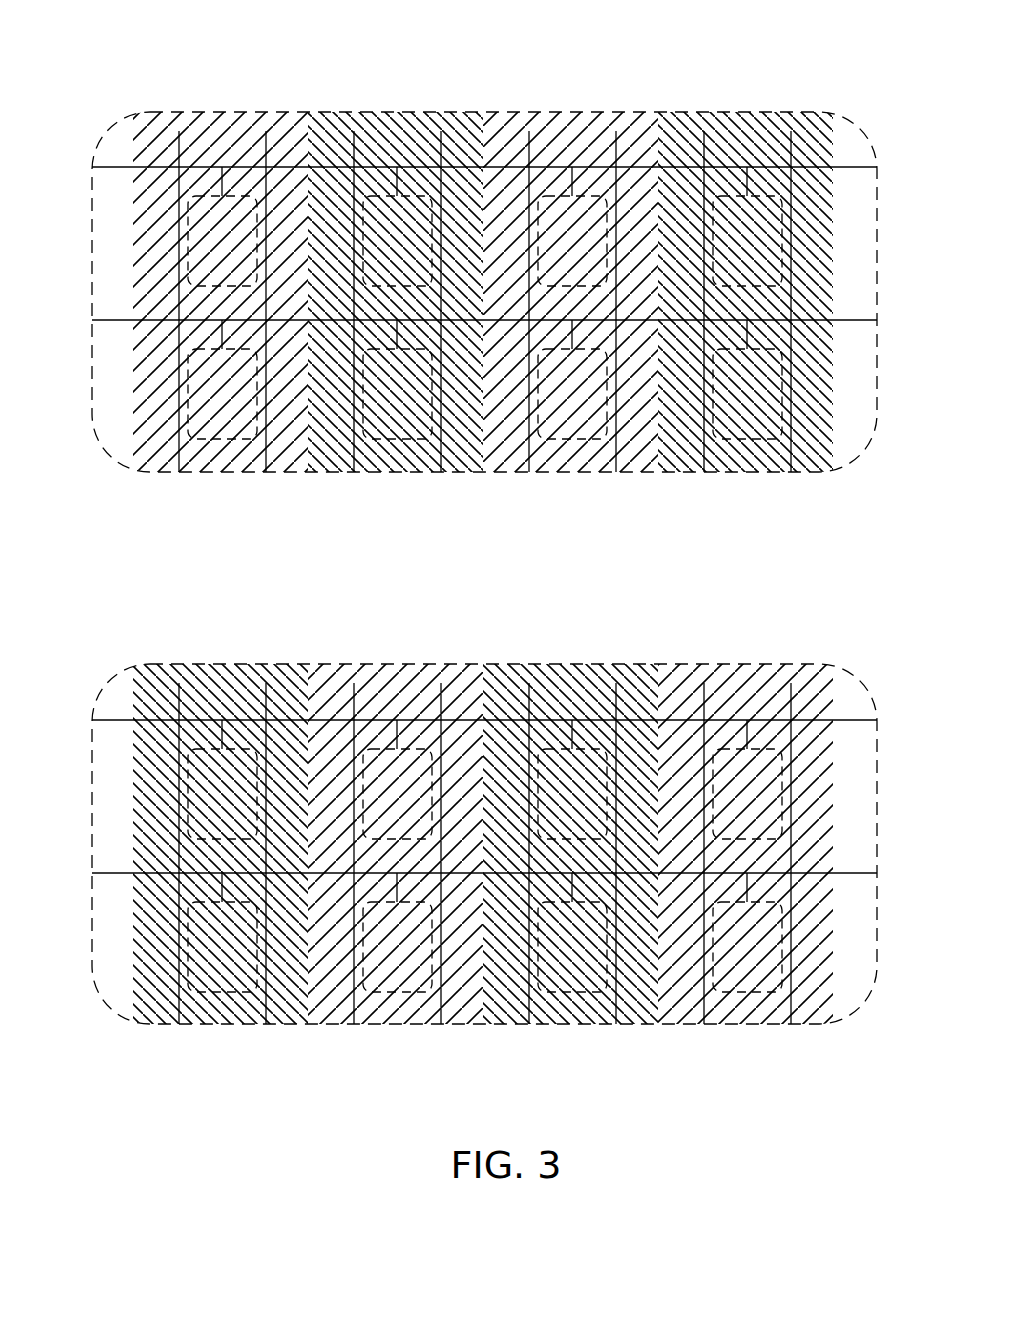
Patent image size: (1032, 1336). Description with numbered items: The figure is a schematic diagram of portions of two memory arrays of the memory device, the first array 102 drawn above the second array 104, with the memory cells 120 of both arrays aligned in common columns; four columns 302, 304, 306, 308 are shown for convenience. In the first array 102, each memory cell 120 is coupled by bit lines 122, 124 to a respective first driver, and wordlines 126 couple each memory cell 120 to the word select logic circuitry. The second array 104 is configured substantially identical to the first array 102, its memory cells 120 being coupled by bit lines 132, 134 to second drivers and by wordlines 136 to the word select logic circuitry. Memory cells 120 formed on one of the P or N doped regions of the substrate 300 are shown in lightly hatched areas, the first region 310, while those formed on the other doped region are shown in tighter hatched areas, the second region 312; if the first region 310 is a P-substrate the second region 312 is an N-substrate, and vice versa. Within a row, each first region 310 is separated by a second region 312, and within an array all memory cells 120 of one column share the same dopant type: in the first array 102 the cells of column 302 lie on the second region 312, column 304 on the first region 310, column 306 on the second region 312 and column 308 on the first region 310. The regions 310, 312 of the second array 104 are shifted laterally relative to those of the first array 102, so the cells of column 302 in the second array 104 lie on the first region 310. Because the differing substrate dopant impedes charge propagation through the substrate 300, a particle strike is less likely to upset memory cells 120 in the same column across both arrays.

The first array 102 is at (87, 408).
The second array 104 is at (87, 775).
The memory cell 120 is at (485, 579).
The bit line 122 is at (180, 443).
The bit line 124 is at (265, 458).
The wordline 126 is at (110, 323).
The bit line 132 is at (180, 998).
The bit line 134 is at (265, 1013).
The wordline 136 is at (110, 875).
The substrate 300 is at (855, 262).
The column 302 is at (218, 96).
The column 304 is at (393, 96).
The column 306 is at (568, 96).
The column 308 is at (737, 96).
The first region 310 is at (411, 118).
The second region 312 is at (236, 118).